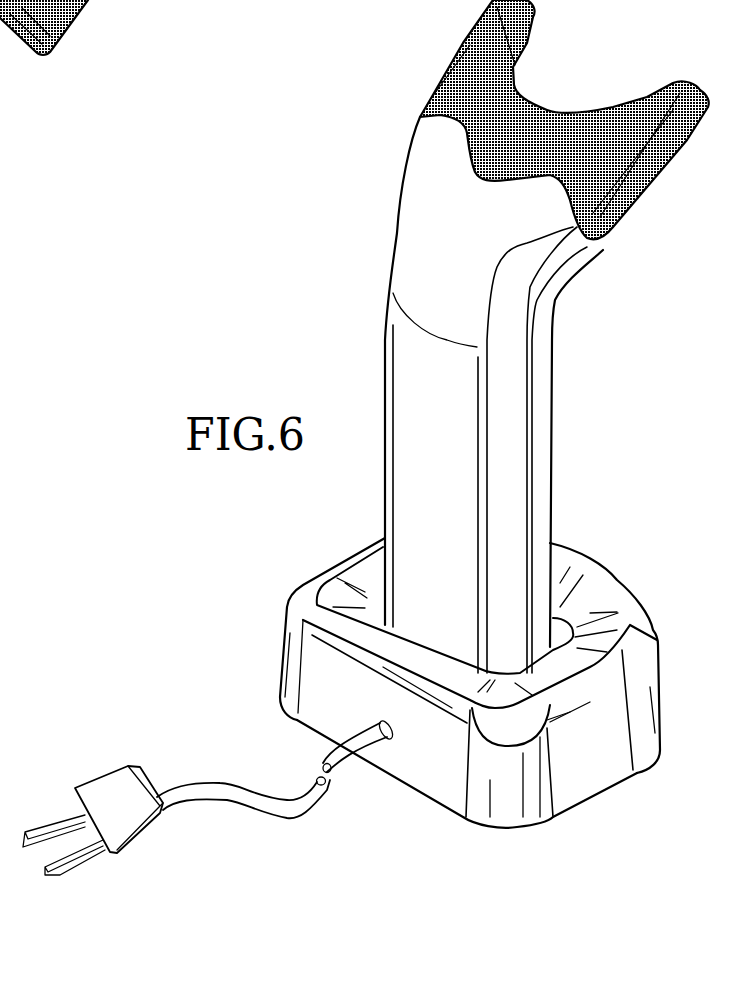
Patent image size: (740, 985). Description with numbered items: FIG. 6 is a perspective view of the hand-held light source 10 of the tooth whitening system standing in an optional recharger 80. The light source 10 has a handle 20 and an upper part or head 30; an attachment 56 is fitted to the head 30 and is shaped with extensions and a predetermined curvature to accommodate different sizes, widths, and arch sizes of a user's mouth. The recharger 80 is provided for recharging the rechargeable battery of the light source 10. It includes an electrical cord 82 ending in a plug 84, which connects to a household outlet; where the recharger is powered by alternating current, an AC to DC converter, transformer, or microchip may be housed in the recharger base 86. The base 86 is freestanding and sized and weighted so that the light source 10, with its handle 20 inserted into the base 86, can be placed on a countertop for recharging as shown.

The hand-held light source 10 is at (245, 267).
The handle 20 is at (427, 410).
The head 30 is at (420, 147).
The attachment 56 is at (647, 187).
The recharger 80 is at (280, 625).
The electrical cord 82 is at (203, 787).
The plug 84 is at (113, 785).
The recharger base 86 is at (597, 598).